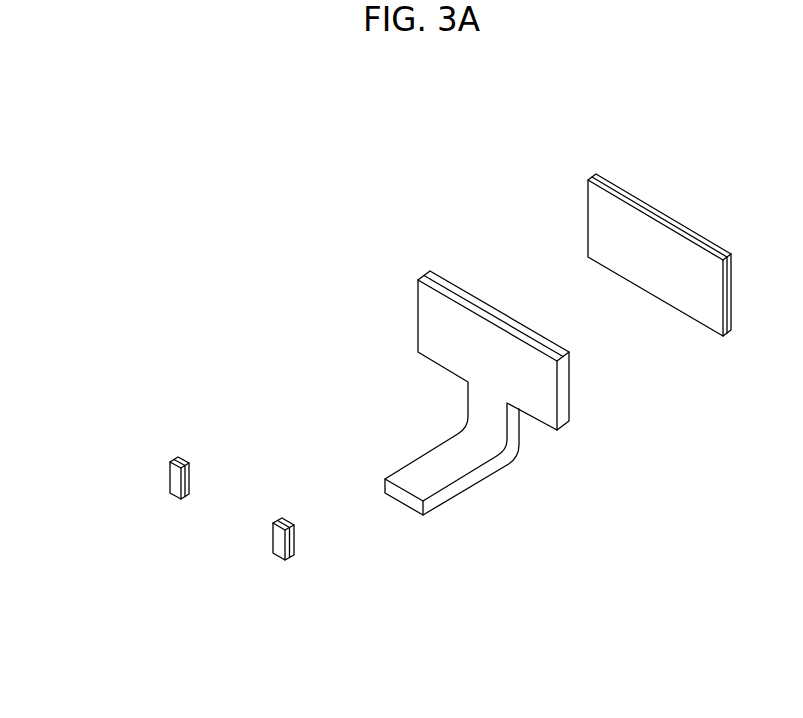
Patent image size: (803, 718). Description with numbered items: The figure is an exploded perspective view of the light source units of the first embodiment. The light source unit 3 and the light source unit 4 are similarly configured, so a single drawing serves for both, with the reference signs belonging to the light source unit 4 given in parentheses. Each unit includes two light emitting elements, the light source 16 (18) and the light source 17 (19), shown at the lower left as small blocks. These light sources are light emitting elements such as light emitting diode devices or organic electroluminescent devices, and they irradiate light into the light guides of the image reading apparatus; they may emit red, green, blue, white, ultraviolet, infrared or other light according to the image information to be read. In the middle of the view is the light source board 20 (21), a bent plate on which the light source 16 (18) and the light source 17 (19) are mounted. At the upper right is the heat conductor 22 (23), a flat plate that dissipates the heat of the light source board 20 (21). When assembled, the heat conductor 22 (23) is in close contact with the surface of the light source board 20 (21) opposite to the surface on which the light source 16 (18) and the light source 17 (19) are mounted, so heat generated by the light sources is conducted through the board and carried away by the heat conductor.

The light source unit 3 is at (383, 407).
The light source unit 4 is at (383, 423).
The light source 16 is at (112, 543).
The light source 17 is at (223, 611).
The light source 18 is at (168, 483).
The light source 19 is at (223, 611).
The light source board 20 is at (413, 392).
The light source board 21 is at (450, 327).
The heat conductor 22 is at (574, 255).
The heat conductor 23 is at (595, 230).